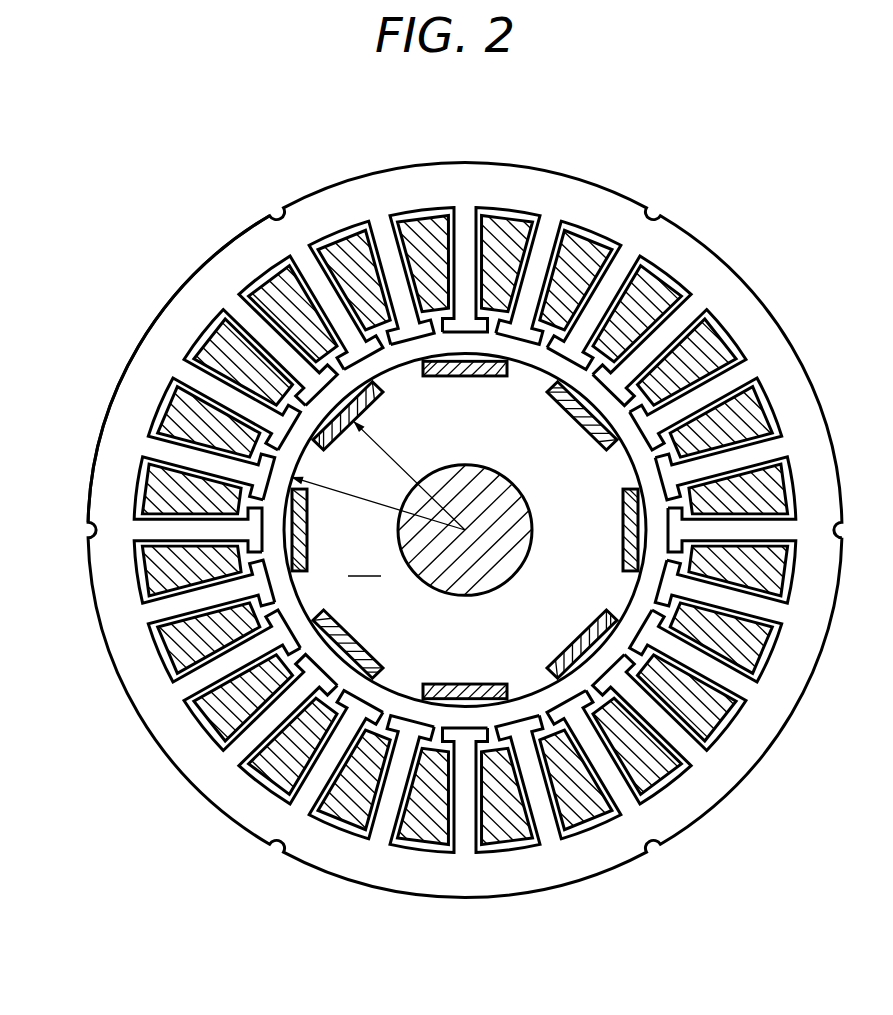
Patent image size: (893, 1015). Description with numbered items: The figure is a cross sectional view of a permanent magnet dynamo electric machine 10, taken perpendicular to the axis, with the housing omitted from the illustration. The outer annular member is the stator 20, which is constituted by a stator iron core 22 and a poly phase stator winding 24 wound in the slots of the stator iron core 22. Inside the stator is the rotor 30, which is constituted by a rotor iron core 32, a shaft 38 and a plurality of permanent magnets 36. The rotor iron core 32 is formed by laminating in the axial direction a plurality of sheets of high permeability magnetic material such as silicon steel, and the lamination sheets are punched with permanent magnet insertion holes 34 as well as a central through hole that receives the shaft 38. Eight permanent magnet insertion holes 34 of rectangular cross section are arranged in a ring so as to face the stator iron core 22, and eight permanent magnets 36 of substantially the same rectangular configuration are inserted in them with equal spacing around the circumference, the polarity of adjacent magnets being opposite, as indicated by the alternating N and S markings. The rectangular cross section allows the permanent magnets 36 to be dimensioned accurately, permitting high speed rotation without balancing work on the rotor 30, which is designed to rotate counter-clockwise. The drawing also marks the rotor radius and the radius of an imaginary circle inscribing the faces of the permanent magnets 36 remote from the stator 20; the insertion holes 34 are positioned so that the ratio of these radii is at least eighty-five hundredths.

The permanent magnet dynamo electric machine 10 is at (741, 193).
The stator 20 is at (258, 228).
The stator iron core 22 is at (180, 290).
The poly phase stator winding 24 is at (215, 342).
The rotor 30 is at (343, 530).
The rotor iron core 32 is at (320, 592).
The permanent magnet insertion holes 34 is at (293, 502).
The permanent magnets 36 is at (293, 553).
The shaft 38 is at (487, 573).